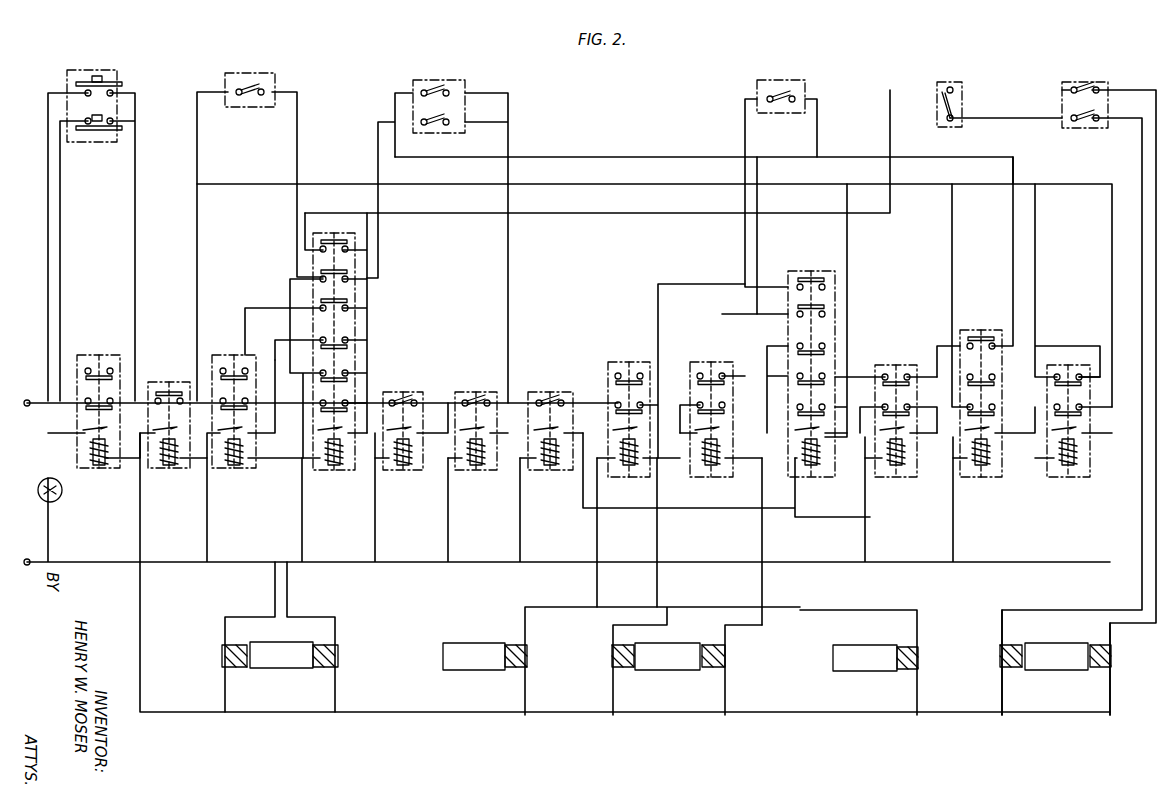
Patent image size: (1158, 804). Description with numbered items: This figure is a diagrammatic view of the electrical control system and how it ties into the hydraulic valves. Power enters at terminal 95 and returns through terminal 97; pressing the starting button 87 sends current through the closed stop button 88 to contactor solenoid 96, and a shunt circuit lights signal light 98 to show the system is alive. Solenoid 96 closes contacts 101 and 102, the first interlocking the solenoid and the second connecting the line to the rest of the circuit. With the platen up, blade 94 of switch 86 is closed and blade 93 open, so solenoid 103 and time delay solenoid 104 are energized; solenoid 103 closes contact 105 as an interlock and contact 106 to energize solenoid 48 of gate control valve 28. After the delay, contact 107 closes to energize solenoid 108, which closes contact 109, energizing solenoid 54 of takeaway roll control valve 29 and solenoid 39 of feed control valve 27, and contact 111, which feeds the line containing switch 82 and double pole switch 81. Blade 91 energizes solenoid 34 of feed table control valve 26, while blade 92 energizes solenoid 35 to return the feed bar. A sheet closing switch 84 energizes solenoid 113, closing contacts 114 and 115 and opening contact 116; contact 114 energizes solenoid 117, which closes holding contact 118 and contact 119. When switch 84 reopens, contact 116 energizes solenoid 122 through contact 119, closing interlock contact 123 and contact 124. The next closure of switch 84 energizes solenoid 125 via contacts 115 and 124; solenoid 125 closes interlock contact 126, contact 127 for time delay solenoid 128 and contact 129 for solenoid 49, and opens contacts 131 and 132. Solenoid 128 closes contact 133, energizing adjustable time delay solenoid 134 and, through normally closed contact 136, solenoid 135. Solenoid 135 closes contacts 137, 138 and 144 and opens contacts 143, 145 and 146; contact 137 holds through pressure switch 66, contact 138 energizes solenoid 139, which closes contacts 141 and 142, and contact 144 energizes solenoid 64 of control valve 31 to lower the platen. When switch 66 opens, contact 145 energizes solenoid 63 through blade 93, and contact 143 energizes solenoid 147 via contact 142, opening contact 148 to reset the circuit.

The starting button 87 is at (108, 86).
The stop button 88 is at (112, 128).
The pressure switch 66 is at (255, 73).
The switch 86 is at (462, 66).
The switch blade 94 is at (426, 92).
The switch blade 93 is at (442, 126).
The switch 84 is at (778, 80).
The switch 82 is at (948, 82).
The double pole switch 81 is at (1100, 82).
The switch blade 92 is at (1080, 82).
The switch blade 91 is at (1076, 125).
The terminal 95 is at (29, 400).
The terminal 97 is at (29, 559).
The signal light 98 is at (38, 478).
The contact 101 is at (99, 365).
The contact 102 is at (113, 406).
The contactor solenoid 96 is at (104, 465).
The contact 148 is at (171, 392).
The solenoid 147 is at (172, 465).
The contact 142 is at (232, 365).
The contact 141 is at (240, 398).
The solenoid 139 is at (236, 465).
The contact 146 is at (334, 240).
The contact 145 is at (346, 276).
The contact 143 is at (346, 305).
The contact 144 is at (344, 333).
The contact 138 is at (344, 368).
The contact 137 is at (344, 398).
The solenoid 135 is at (336, 467).
The contact 136 is at (406, 394).
The adjustable time delay solenoid 134 is at (405, 467).
The contact 133 is at (476, 395).
The time delay solenoid 128 is at (478, 467).
The contact 107 is at (548, 395).
The time delay solenoid 104 is at (552, 467).
The contact 111 is at (612, 372).
The contact 109 is at (614, 404).
The solenoid 108 is at (631, 467).
The contact 106 is at (715, 356).
The contact 105 is at (716, 412).
The solenoid 103 is at (713, 467).
The contact 132 is at (811, 278).
The contact 131 is at (820, 310).
The contact 129 is at (822, 354).
The contact 127 is at (822, 384).
The contact 126 is at (820, 414).
The solenoid 125 is at (813, 467).
The contact 124 is at (896, 370).
The contact 123 is at (904, 414).
The solenoid 122 is at (898, 467).
The contact 116 is at (983, 338).
The contact 115 is at (992, 374).
The contact 114 is at (992, 404).
The solenoid 113 is at (983, 467).
The contact 119 is at (1066, 370).
The contact 118 is at (1080, 414).
The solenoid 117 is at (1070, 467).
The control valve 31 is at (288, 668).
The solenoid 64 is at (222, 656).
The solenoid 63 is at (338, 656).
The takeaway roll control valve 29 is at (483, 670).
The solenoid 54 is at (527, 656).
The solenoid 48 is at (612, 656).
The gate control valve 28 is at (678, 670).
The solenoid 49 is at (725, 656).
The feed control valve 27 is at (870, 671).
The solenoid 39 is at (918, 658).
The solenoid 34 is at (1000, 656).
The feed table control valve 26 is at (1064, 670).
The solenoid 35 is at (1111, 656).